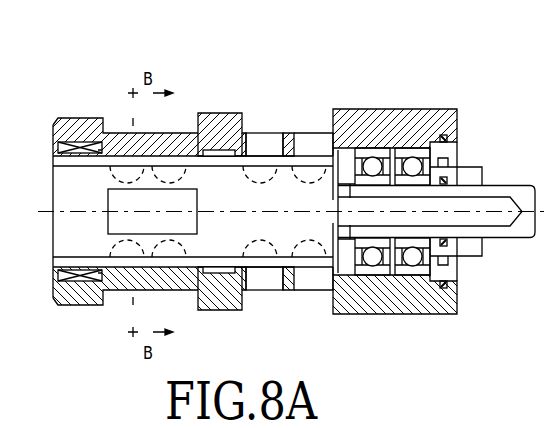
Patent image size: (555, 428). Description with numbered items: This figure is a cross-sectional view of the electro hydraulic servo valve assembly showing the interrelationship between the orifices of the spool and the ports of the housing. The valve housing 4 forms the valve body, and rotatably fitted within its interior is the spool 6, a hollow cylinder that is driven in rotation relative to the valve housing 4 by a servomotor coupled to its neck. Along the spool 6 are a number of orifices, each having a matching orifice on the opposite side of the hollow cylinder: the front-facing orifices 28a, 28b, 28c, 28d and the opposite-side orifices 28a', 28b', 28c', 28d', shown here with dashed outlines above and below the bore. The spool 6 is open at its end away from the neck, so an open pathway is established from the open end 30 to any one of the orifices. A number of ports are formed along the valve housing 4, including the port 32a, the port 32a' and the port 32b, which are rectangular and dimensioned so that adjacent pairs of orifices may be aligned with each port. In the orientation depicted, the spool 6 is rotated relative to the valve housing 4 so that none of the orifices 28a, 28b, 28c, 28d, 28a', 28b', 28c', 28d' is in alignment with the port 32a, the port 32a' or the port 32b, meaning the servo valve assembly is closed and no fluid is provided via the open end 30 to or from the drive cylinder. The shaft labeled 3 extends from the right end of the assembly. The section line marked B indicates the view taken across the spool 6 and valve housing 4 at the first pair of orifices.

The spindle shaft 3 is at (446, 216).
The valve housing 4 is at (223, 113).
The spool 6 is at (218, 311).
The open end 30 is at (63, 193).
The port 32a is at (268, 309).
The port 32a' is at (282, 86).
The port 32b is at (110, 222).
The orifice 28a is at (351, 302).
The orifice 28b is at (288, 304).
The orifice 28c is at (190, 304).
The orifice 28d is at (111, 303).
The orifice 28a' is at (352, 125).
The orifice 28b' is at (293, 123).
The orifice 28c' is at (197, 108).
The orifice 28d' is at (111, 111).